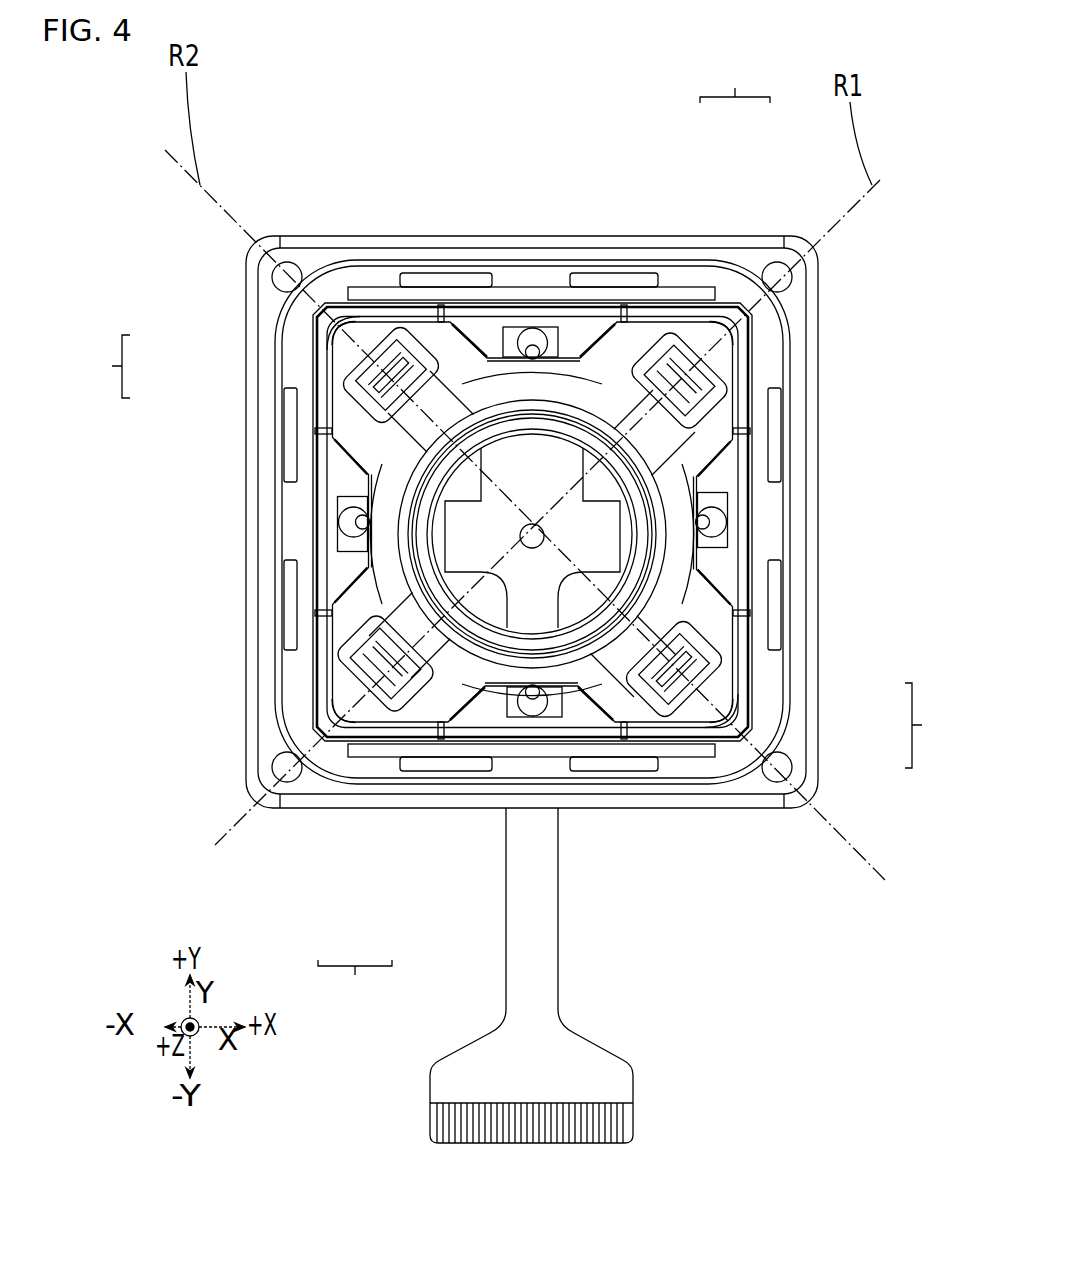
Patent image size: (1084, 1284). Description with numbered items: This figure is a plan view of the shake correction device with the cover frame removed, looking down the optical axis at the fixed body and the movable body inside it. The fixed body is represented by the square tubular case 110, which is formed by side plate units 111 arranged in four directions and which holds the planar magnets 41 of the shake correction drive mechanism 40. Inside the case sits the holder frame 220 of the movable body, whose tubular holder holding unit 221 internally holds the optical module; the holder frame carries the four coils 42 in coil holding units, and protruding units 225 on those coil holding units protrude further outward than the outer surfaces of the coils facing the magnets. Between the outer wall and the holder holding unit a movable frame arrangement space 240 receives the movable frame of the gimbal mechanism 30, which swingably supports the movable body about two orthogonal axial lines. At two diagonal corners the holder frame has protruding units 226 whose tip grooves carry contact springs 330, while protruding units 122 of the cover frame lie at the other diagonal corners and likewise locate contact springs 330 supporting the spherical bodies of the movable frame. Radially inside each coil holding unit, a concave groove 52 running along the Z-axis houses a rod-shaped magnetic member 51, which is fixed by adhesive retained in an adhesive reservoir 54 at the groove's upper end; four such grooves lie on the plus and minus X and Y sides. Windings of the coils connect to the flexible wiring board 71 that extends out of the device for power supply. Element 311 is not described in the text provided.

The gimbal mechanism 30 is at (393, 352).
The shake correction drive mechanism 40 is at (515, 528).
The magnet 41 is at (678, 260).
The coil 42 is at (712, 292).
The magnetic member 51 is at (538, 340).
The concave groove 52 is at (526, 420).
The adhesive reservoir 54 is at (525, 343).
The flexible wiring board 71 is at (530, 982).
The case 110 is at (822, 297).
The side plate unit 111 is at (520, 236).
The protruding unit 122 is at (362, 322).
The holder frame 220 is at (319, 680).
The holder holding unit 221 is at (447, 273).
The protruding unit 225 is at (418, 287).
The protruding unit 226 is at (420, 435).
The movable frame arrangement space 240 is at (740, 445).
The flexure portion 311 is at (702, 345).
The contact spring 330 is at (683, 350).